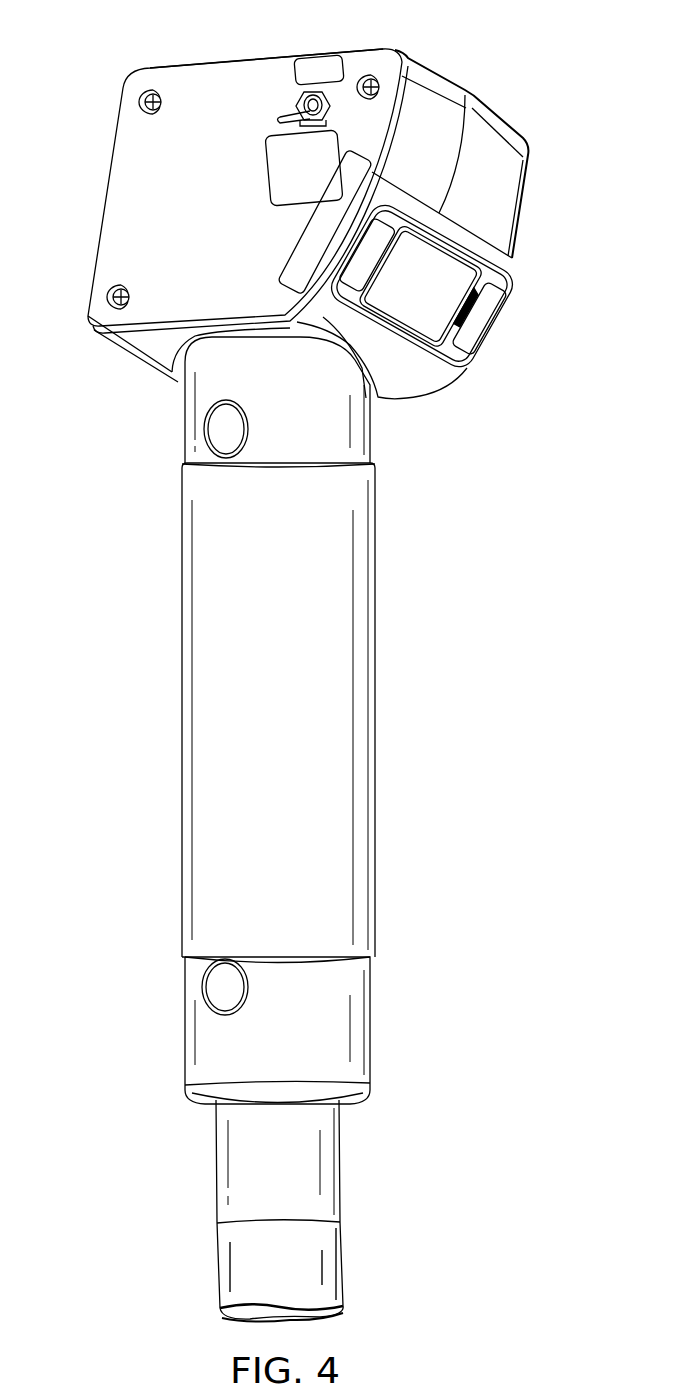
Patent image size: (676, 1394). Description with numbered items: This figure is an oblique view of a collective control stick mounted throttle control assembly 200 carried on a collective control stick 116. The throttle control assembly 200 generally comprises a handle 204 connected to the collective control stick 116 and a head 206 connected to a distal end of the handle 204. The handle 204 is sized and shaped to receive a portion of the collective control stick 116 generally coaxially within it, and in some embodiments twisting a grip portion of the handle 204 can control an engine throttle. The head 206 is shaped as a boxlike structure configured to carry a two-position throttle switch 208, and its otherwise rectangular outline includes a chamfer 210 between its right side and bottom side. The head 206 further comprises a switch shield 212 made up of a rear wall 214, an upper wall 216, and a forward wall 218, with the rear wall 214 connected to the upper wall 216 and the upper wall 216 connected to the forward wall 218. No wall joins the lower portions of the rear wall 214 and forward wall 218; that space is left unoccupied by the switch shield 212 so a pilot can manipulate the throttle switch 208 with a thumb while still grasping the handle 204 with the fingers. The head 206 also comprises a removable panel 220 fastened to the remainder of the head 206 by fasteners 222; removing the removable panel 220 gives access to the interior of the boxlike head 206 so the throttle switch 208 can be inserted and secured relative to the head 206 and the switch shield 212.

The throttle control assembly 200 is at (323, 664).
The handle 204 is at (182, 740).
The head 206 is at (100, 195).
The throttle switch 208 is at (412, 328).
The chamfer 210 is at (408, 206).
The switch shield 212 is at (443, 293).
The rear wall 214 is at (336, 332).
The upper wall 216 is at (440, 184).
The forward wall 218 is at (452, 362).
The removable panel 220 is at (225, 82).
The fasteners 222 is at (140, 96).
The collective control stick 116 is at (216, 1166).